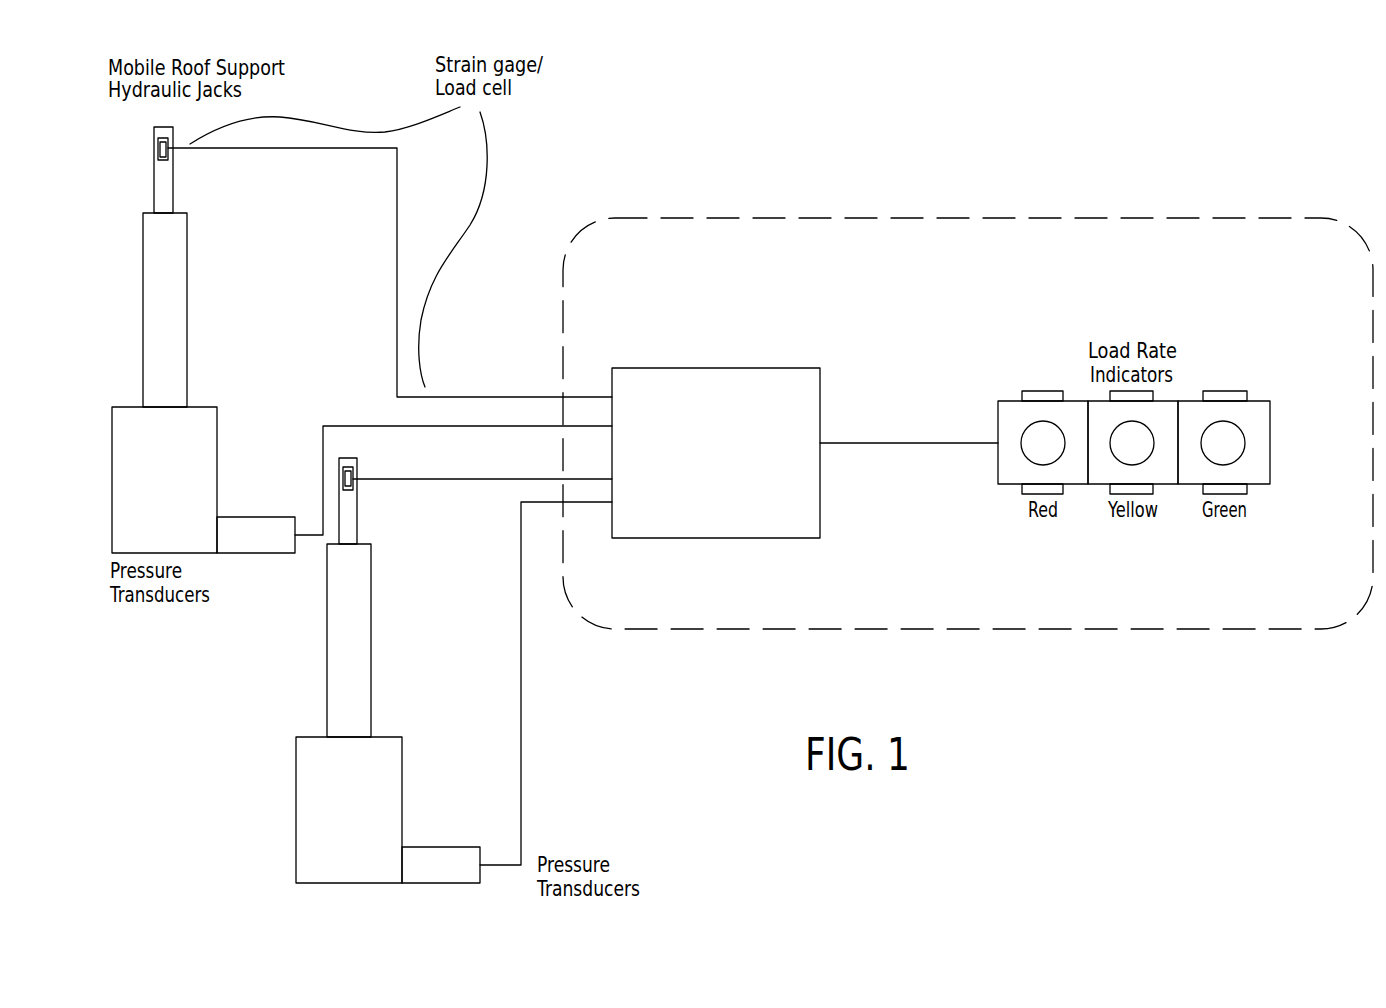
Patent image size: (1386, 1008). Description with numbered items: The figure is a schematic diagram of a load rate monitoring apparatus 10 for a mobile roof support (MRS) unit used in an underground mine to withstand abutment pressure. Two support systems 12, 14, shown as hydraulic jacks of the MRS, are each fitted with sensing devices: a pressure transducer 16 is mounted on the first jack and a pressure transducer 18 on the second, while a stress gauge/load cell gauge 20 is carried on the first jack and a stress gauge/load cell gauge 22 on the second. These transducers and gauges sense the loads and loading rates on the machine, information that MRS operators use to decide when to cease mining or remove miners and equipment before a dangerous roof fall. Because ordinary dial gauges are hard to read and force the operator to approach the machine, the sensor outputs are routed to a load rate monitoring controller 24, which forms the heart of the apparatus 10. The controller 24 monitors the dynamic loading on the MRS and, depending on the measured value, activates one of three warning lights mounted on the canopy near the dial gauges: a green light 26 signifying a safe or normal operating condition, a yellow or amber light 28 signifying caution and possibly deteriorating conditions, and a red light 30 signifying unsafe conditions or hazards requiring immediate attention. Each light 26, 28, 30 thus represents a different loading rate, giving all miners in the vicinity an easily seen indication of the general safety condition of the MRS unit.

The apparatus 10 is at (1190, 216).
The support system 12 is at (187, 338).
The support system 14 is at (371, 669).
The pressure transducer 16 is at (257, 517).
The pressure transducer 18 is at (440, 847).
The stress gauge/load cell gauge 20 is at (158, 147).
The stress gauge/load cell gauge 22 is at (356, 478).
The load rate monitoring controller 24 is at (717, 368).
The green warning light 26 is at (1189, 484).
The yellow warning light 28 is at (1097, 484).
The red warning light 30 is at (1010, 484).